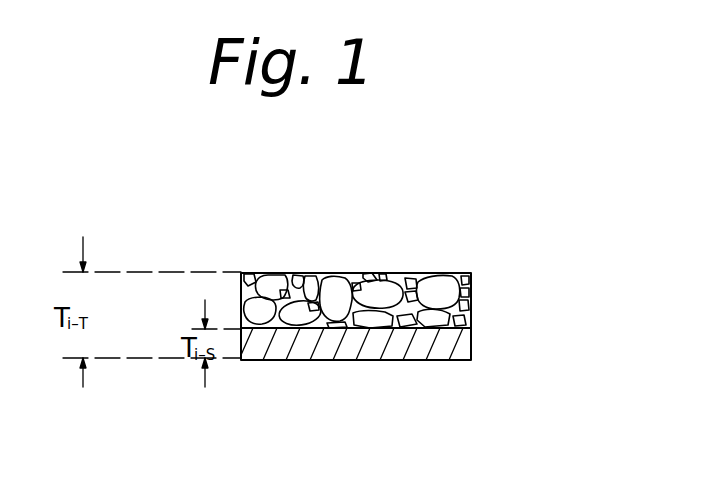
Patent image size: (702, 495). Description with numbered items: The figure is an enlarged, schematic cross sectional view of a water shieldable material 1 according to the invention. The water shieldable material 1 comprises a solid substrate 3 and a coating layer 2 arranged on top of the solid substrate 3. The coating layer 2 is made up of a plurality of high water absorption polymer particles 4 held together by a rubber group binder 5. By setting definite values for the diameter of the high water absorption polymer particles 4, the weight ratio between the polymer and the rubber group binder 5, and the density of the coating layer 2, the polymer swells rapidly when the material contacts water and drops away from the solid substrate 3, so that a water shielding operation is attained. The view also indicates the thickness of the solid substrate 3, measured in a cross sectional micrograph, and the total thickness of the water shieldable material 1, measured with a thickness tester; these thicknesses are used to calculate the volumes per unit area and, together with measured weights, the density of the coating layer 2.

The water shieldable material 1 is at (335, 237).
The coating layer 2 is at (478, 273).
The solid substrate 3 is at (445, 360).
The high water absorption polymer particles 4 is at (345, 277).
The rubber group binder 5 is at (434, 274).